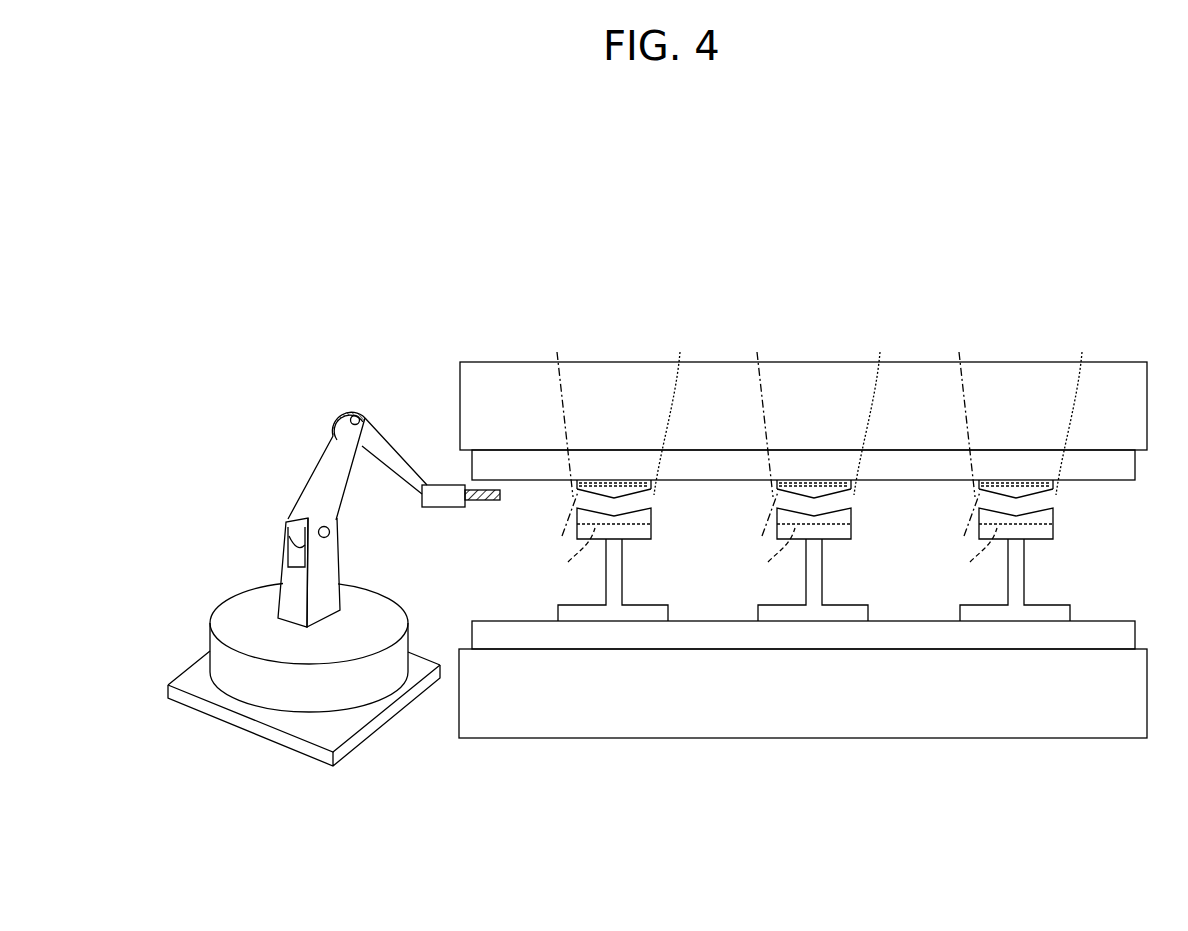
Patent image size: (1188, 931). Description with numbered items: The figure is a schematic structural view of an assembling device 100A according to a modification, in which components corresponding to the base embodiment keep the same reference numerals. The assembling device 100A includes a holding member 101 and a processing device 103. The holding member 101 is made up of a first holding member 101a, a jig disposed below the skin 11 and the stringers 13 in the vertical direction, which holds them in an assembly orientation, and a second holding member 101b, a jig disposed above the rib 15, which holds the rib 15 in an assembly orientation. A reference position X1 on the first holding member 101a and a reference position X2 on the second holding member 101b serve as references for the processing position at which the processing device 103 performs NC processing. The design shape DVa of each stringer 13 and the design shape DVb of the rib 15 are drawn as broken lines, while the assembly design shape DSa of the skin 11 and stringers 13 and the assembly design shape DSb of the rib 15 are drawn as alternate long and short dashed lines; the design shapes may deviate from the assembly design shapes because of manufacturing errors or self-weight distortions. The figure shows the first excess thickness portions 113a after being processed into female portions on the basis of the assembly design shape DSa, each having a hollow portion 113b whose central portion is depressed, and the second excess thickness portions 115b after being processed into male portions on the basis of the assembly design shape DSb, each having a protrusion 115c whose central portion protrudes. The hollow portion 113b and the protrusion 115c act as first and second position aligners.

The assembling device 100A is at (753, 147).
The holding member 101 is at (615, 236).
The first holding member 101a is at (498, 738).
The second holding member 101b is at (497, 362).
The processing device 103 is at (362, 742).
The reference position X1 is at (489, 713).
The reference position X2 is at (489, 420).
The skin 11 is at (1097, 620).
The stringer 13 is at (666, 609).
The rib 15 is at (1133, 486).
The first excess thickness portion 113a is at (651, 521).
The hollow portion 113b is at (628, 510).
The second excess thickness portion 115b is at (608, 482).
The protrusion 115c is at (635, 503).
The assembly design shape DSa is at (751, 524).
The assembly design shape DSb is at (748, 411).
The design shape DVa is at (764, 560).
The design shape DVb is at (879, 410).